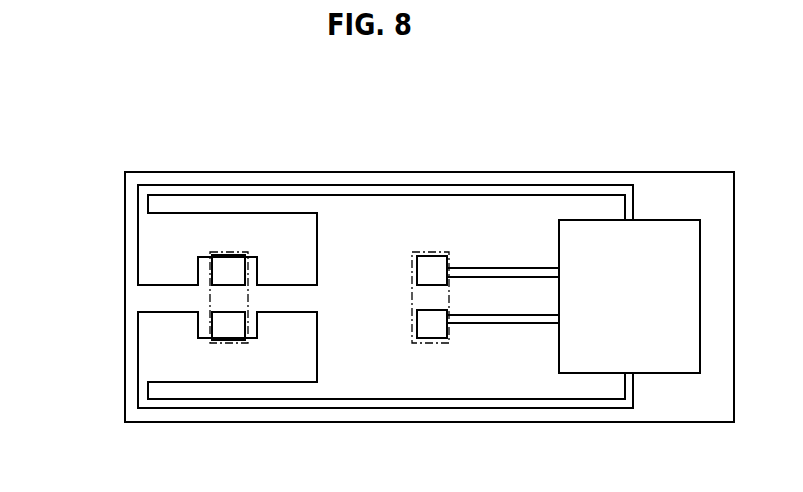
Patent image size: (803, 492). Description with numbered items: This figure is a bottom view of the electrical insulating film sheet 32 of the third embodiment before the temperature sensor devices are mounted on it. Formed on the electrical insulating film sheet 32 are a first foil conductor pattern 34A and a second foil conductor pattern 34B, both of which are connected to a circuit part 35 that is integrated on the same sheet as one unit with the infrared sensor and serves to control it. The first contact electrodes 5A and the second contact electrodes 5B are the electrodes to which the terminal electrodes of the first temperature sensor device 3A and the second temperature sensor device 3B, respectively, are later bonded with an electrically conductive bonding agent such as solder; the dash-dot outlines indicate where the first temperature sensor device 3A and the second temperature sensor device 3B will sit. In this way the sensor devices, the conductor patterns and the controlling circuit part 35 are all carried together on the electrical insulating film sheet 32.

The electrical insulating film sheet 32 is at (485, 172).
The first foil conductor pattern 34A is at (138, 232).
The second foil conductor pattern 34B is at (482, 268).
The circuit part 35 is at (673, 232).
The first contact electrode 5A is at (236, 275).
The second contact electrode 5B is at (422, 273).
The first temperature sensor device 3A is at (210, 302).
The second temperature sensor device 3B is at (412, 298).